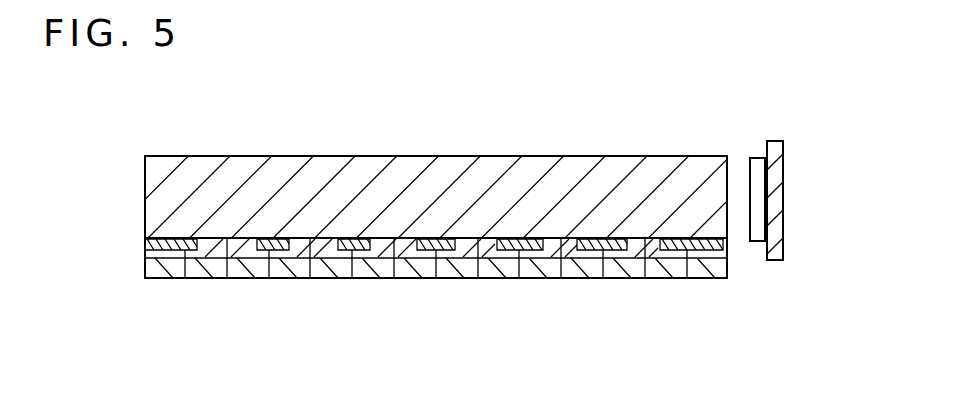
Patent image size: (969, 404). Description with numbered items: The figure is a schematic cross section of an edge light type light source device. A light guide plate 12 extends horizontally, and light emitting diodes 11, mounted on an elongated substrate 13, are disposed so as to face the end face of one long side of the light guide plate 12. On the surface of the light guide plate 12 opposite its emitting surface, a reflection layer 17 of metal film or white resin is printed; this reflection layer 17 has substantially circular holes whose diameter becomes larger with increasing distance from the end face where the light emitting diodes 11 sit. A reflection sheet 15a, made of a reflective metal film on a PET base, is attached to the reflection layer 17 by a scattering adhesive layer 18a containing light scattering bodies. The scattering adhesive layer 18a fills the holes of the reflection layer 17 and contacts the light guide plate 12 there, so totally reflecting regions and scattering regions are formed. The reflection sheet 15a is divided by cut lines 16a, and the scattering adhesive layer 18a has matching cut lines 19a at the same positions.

The light guide plate 12 is at (529, 170).
The light emitting diode 11 is at (762, 158).
The substrate 13 is at (779, 181).
The reflection layer 17 is at (147, 245).
The scattering adhesive layer 18a is at (206, 266).
The cut line 19a is at (283, 256).
The cut line 16a is at (500, 268).
The reflection sheet 15a is at (618, 285).